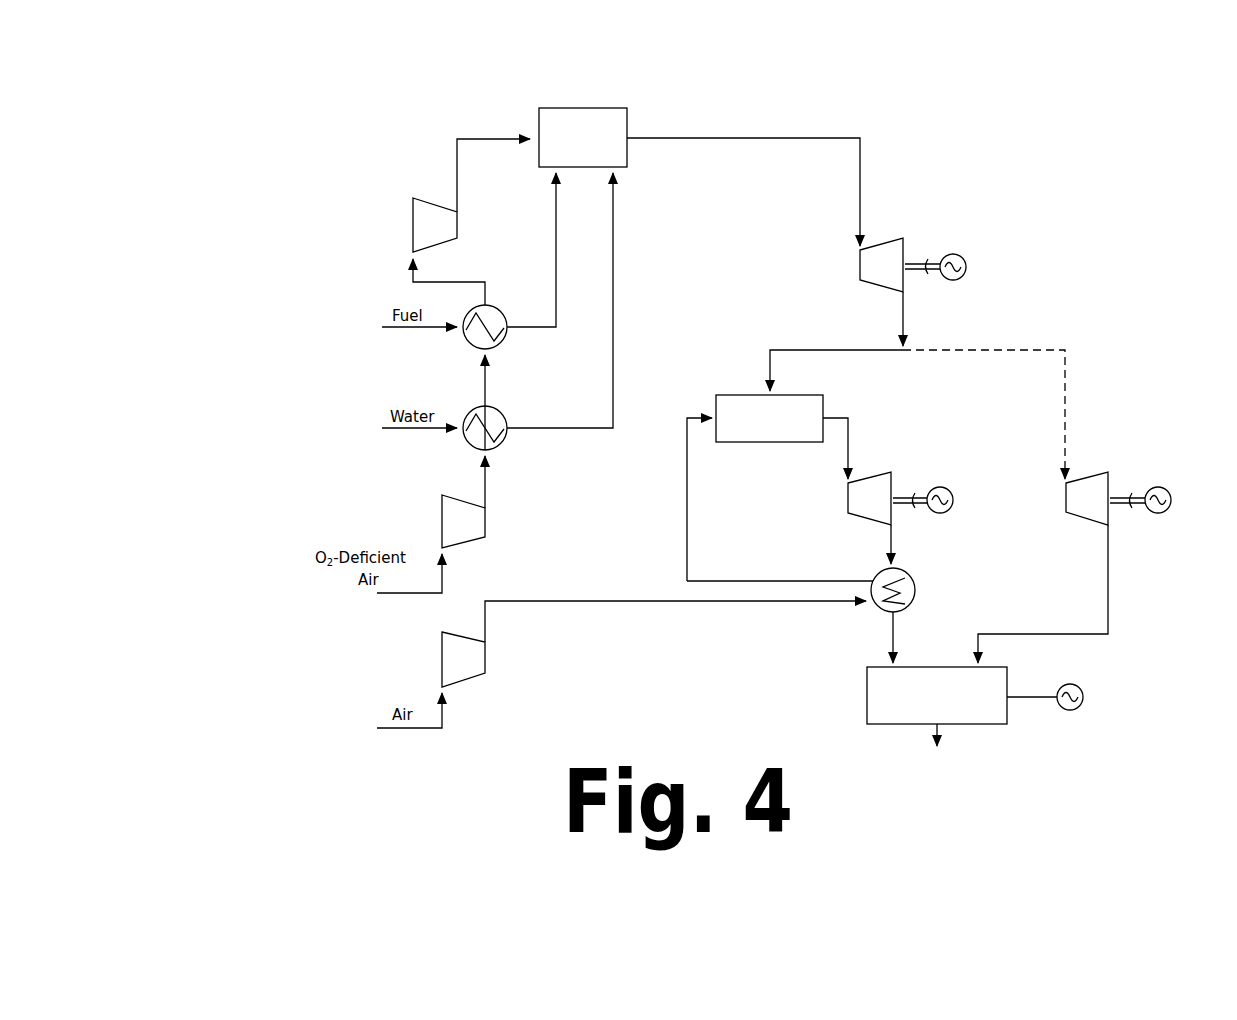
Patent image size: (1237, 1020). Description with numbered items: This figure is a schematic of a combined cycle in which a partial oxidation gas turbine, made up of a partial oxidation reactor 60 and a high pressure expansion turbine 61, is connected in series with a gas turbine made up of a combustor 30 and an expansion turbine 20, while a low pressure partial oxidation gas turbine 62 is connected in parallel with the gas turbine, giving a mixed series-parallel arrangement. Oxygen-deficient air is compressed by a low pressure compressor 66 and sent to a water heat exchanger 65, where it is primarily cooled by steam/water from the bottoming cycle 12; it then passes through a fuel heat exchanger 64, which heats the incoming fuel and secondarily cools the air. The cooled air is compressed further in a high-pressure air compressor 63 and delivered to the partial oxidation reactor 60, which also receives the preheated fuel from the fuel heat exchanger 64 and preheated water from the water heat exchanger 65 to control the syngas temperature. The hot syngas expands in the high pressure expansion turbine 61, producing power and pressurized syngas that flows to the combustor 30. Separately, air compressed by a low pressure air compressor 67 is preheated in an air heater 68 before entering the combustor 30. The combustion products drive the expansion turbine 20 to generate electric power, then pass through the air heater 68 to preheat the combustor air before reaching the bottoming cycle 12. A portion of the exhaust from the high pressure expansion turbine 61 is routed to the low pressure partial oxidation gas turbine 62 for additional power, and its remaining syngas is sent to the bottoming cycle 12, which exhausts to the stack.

The bottoming cycle 12 is at (990, 724).
The expansion turbine 20 is at (862, 515).
The combustor 30 is at (823, 408).
The partial oxidation reactor 60 is at (605, 108).
The high pressure expansion turbine 61 is at (903, 238).
The low pressure partial oxidation gas turbine 62 is at (1095, 472).
The high-pressure air compressor 63 is at (413, 213).
The fuel heat exchanger 64 is at (463, 340).
The water heat exchanger 65 is at (463, 441).
The low pressure compressor 66 is at (442, 535).
The low pressure air compressor 67 is at (442, 658).
The air heater 68 is at (873, 605).